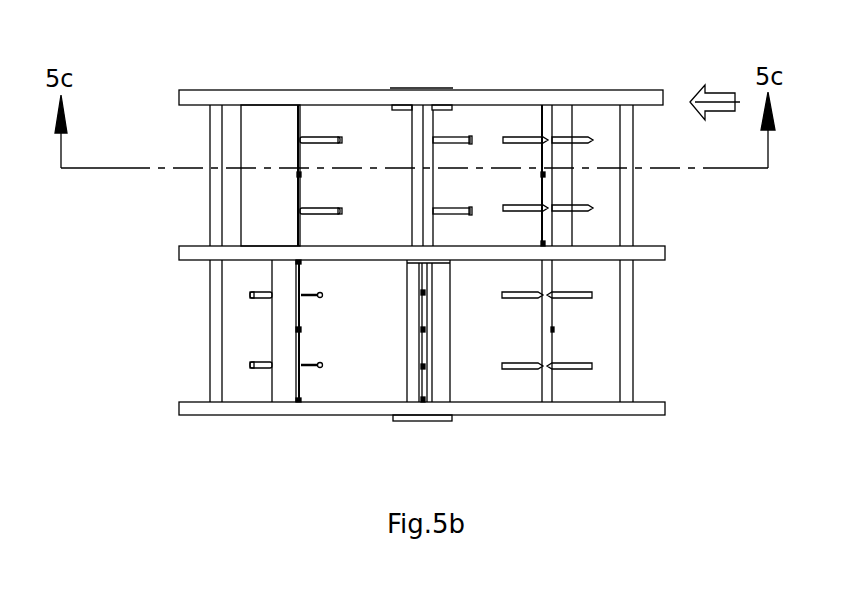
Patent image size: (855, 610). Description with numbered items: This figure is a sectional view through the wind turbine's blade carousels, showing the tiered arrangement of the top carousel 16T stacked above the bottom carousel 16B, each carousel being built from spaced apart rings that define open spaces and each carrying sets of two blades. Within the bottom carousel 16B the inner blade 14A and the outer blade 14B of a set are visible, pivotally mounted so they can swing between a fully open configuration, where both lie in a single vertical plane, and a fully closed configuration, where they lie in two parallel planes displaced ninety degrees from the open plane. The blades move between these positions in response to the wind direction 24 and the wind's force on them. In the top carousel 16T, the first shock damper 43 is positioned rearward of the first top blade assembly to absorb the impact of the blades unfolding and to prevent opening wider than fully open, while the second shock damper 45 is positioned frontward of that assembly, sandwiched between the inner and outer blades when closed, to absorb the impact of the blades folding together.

The wind direction 24 is at (720, 93).
The first shock damper 43 is at (318, 139).
The second shock damper 45 is at (526, 140).
The top carousel 16T is at (343, 139).
The bottom carousel 16B is at (340, 371).
The inner blade 14A is at (503, 382).
The outer blade 14B is at (596, 382).